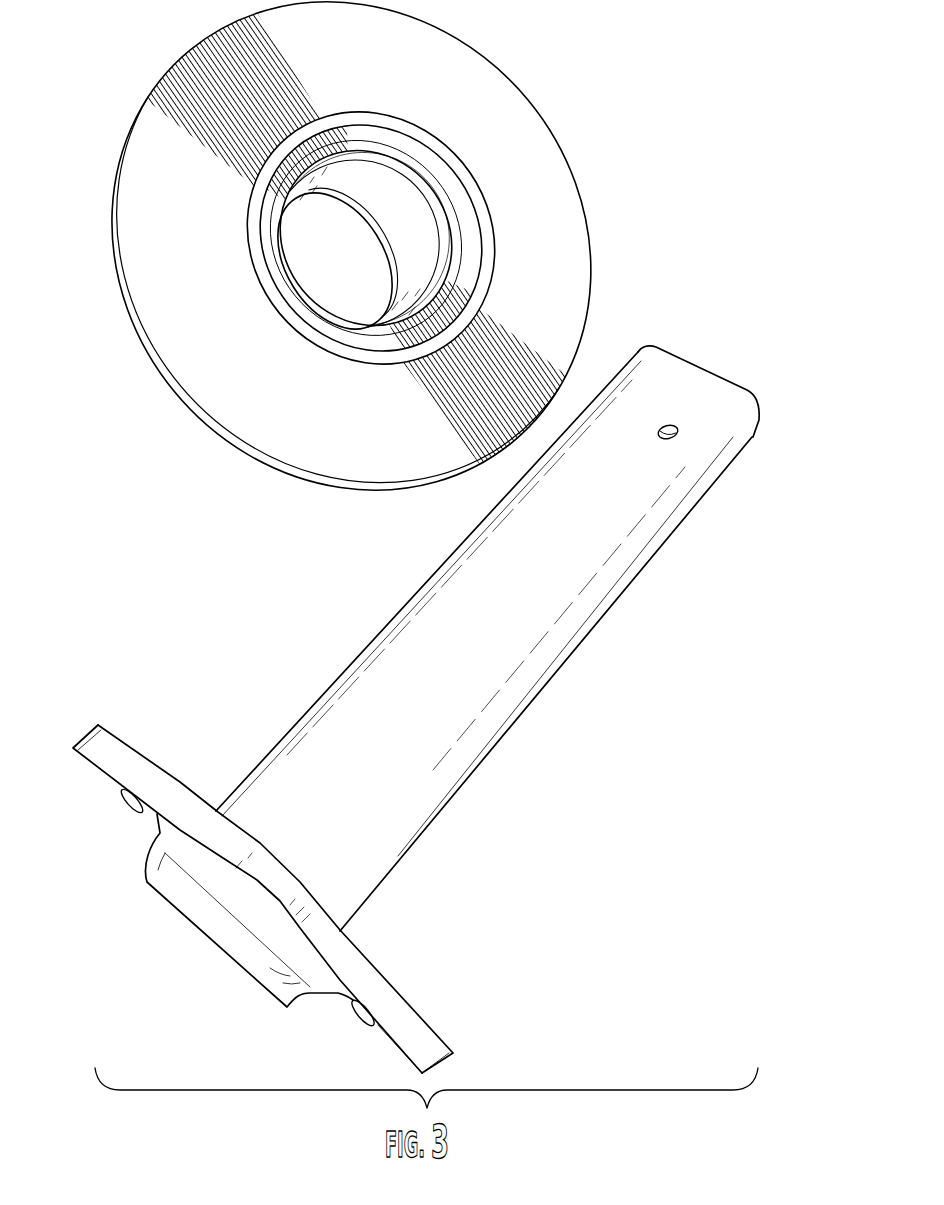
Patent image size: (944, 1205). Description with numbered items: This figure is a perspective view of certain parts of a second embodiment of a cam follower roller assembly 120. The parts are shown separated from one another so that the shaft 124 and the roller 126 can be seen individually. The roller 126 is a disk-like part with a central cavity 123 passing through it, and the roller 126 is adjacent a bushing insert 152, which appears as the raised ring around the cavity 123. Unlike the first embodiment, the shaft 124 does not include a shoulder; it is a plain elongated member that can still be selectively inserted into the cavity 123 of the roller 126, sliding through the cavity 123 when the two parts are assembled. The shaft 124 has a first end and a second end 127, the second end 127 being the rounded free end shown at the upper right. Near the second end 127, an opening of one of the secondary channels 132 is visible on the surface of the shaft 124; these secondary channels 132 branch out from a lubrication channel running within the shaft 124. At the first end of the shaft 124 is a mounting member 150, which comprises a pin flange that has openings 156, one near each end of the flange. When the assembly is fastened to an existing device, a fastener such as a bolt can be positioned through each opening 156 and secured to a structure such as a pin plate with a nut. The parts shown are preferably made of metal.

The cam follower roller assembly 120 is at (190, 528).
The cavity 123 is at (348, 286).
The shaft 124 is at (418, 632).
The roller 126 is at (224, 382).
The second end 127 is at (744, 392).
The secondary channels 132 is at (677, 435).
The mounting member 150 is at (158, 832).
The bushing insert 152 is at (470, 252).
The openings 156 is at (133, 806).